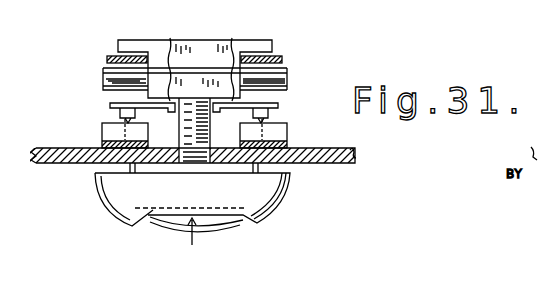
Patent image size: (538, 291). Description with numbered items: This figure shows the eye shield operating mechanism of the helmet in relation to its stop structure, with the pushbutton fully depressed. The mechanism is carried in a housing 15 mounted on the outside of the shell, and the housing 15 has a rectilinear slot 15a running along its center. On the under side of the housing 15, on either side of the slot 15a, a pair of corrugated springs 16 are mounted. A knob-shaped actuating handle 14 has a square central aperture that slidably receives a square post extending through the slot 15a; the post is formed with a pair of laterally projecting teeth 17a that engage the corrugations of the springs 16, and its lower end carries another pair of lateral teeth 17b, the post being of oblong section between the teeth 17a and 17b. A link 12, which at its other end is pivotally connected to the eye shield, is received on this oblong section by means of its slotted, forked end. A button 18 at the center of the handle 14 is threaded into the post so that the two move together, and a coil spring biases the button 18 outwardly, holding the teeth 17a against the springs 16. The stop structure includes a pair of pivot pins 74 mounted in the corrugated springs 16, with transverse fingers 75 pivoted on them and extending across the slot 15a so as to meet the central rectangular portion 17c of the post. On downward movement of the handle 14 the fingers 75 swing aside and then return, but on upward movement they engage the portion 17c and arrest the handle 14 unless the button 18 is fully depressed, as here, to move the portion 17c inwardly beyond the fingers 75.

The link 12 is at (107, 58).
The actuating handle 14 is at (276, 196).
The housing 15 is at (39, 164).
The slot 15a is at (106, 195).
The corrugated springs 16 is at (102, 131).
The laterally projecting teeth 17a is at (288, 81).
The lateral teeth 17b is at (262, 41).
The central rectangular portion 17c is at (157, 84).
The button 18 is at (216, 222).
The pivot pins 74 is at (118, 120).
The fingers 75 is at (170, 40).